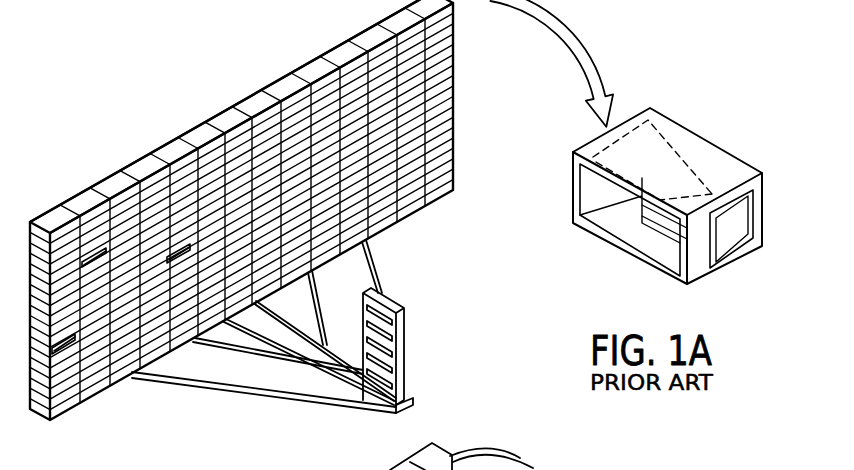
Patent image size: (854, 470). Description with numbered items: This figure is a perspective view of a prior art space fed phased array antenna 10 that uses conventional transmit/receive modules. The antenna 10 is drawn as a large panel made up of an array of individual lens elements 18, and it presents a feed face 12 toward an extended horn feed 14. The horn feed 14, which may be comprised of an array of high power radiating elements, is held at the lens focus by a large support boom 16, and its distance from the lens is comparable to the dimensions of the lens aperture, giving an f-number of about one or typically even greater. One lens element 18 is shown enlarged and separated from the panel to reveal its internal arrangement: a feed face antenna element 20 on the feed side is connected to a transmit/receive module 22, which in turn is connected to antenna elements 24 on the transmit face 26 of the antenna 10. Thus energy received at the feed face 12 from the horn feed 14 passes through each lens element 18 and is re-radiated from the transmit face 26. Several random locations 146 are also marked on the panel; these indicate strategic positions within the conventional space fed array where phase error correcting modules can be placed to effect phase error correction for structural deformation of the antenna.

The space fed phased array antenna 10 is at (266, 66).
The feed face 12 is at (430, 186).
The horn feed 14 is at (402, 341).
The support boom 16 is at (297, 401).
The lens element 18 is at (408, 145).
The feed face antenna element 20 is at (737, 243).
The transmit/receive module 22 is at (663, 221).
The antenna elements 24 is at (600, 190).
The transmit face 26 is at (580, 146).
The random locations 146 is at (177, 246).